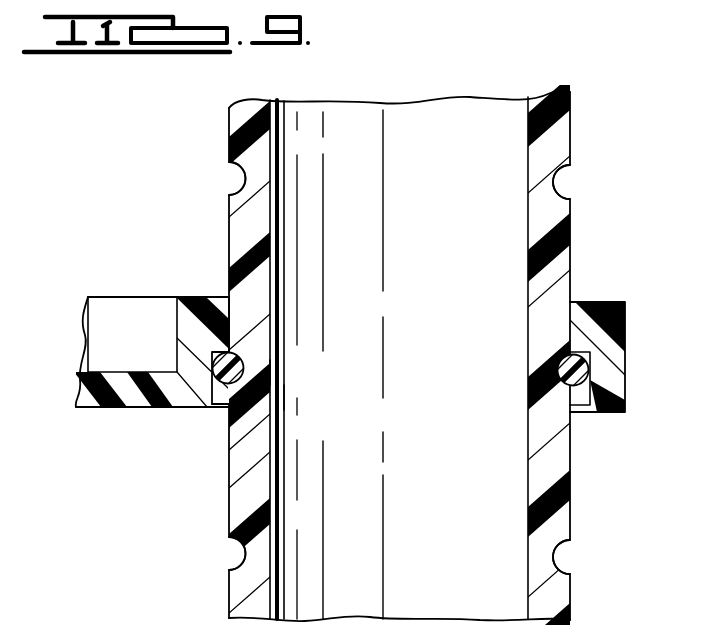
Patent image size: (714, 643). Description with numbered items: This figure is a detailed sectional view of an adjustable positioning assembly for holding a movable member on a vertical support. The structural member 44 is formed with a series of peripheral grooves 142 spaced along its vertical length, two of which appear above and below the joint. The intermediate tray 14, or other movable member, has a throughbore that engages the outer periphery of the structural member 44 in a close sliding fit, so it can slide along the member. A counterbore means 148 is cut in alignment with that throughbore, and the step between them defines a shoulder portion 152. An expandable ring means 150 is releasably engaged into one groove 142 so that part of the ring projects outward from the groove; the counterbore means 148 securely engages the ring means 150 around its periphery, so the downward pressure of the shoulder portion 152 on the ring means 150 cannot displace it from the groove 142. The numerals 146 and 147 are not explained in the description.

The structural member 44 is at (567, 124).
The intermediate tray 14 is at (88, 365).
The peripheral grooves 142 is at (240, 178).
The shoulder 146 is at (232, 303).
The inner lining layer 147 is at (238, 372).
The counterbore means 148 is at (215, 406).
The expandable ring means 150 is at (242, 392).
The shoulder portion 152 is at (211, 359).